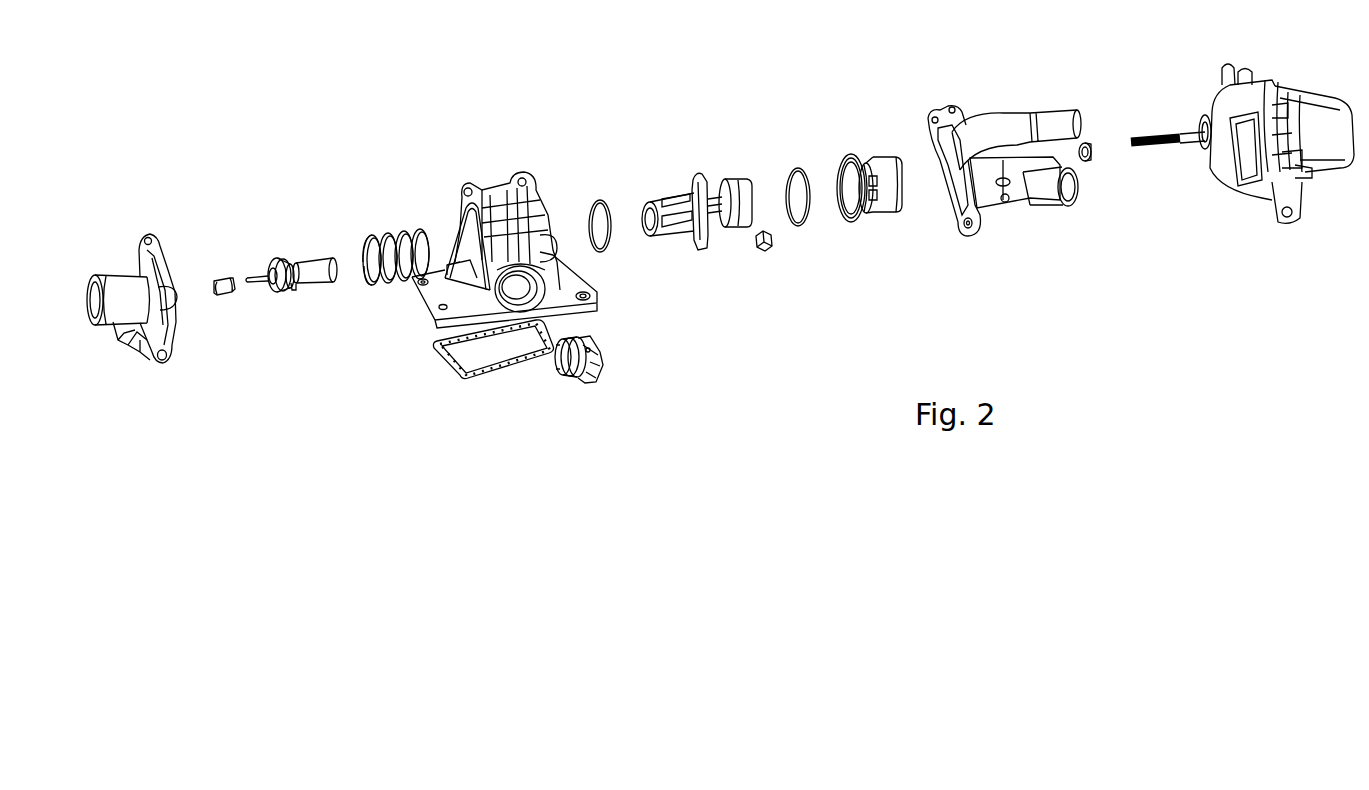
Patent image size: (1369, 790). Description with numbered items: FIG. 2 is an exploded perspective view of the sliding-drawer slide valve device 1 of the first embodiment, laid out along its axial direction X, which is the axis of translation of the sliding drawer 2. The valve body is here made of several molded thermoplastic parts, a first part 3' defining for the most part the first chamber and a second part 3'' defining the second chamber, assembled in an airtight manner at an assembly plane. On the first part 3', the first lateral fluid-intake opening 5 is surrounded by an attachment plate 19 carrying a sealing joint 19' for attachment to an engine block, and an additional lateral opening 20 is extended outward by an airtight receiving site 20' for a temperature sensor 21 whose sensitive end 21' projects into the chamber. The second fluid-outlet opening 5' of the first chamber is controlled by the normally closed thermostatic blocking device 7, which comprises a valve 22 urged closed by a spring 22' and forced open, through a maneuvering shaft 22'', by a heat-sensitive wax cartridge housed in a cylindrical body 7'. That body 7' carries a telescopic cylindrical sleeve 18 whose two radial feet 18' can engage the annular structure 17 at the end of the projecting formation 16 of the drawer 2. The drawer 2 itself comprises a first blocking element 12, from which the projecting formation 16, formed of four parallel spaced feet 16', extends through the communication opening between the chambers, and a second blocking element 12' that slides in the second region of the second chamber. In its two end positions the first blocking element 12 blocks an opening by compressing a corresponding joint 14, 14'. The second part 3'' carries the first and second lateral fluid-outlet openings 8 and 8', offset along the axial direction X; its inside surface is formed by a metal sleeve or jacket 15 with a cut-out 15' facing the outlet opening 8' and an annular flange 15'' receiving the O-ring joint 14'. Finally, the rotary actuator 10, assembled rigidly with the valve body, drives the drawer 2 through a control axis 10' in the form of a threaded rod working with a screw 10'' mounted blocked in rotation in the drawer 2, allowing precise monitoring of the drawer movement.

The sliding-drawer slide valve device 1 is at (645, 422).
The sliding drawer 2 is at (710, 266).
The first part of the valve body 3' is at (504, 207).
The second part of the valve body 3'' is at (994, 134).
The first lateral fluid-intake opening 5 is at (478, 408).
The second fluid-outlet opening 5' is at (177, 298).
The thermostatic blocking device 7 is at (298, 175).
The cylindrical body 7' is at (312, 336).
The first lateral fluid-outlet opening 8 is at (1040, 132).
The second lateral fluid-outlet opening 8' is at (1077, 213).
The actuator 10 is at (1276, 127).
The control axis 10' is at (1168, 172).
The screw 10'' is at (783, 274).
The first blocking element 12 is at (717, 169).
The second blocking element 12' is at (748, 180).
The joint 14 is at (678, 141).
The compression joint 14' is at (846, 153).
The inside surface 15 is at (888, 214).
The cut-out 15' is at (860, 243).
The annular flange 15'' is at (881, 153).
The projecting formation 16 is at (676, 274).
The feet 16' is at (665, 180).
The annular structure 17 is at (648, 205).
The telescopic cylindrical sleeve 18 is at (320, 234).
The radial feet 18' is at (359, 332).
The attachment plate 19 is at (600, 317).
The sealing joint 19' is at (491, 381).
The additional lateral opening 20 is at (622, 354).
The receiving site 20' is at (599, 281).
The temperature sensor 21 is at (580, 414).
The sensitive end 21' is at (534, 419).
The valve 22 is at (266, 223).
The spring 22' is at (400, 220).
The maneuvering shaft 22'' is at (225, 240).
The axial direction X is at (765, 201).